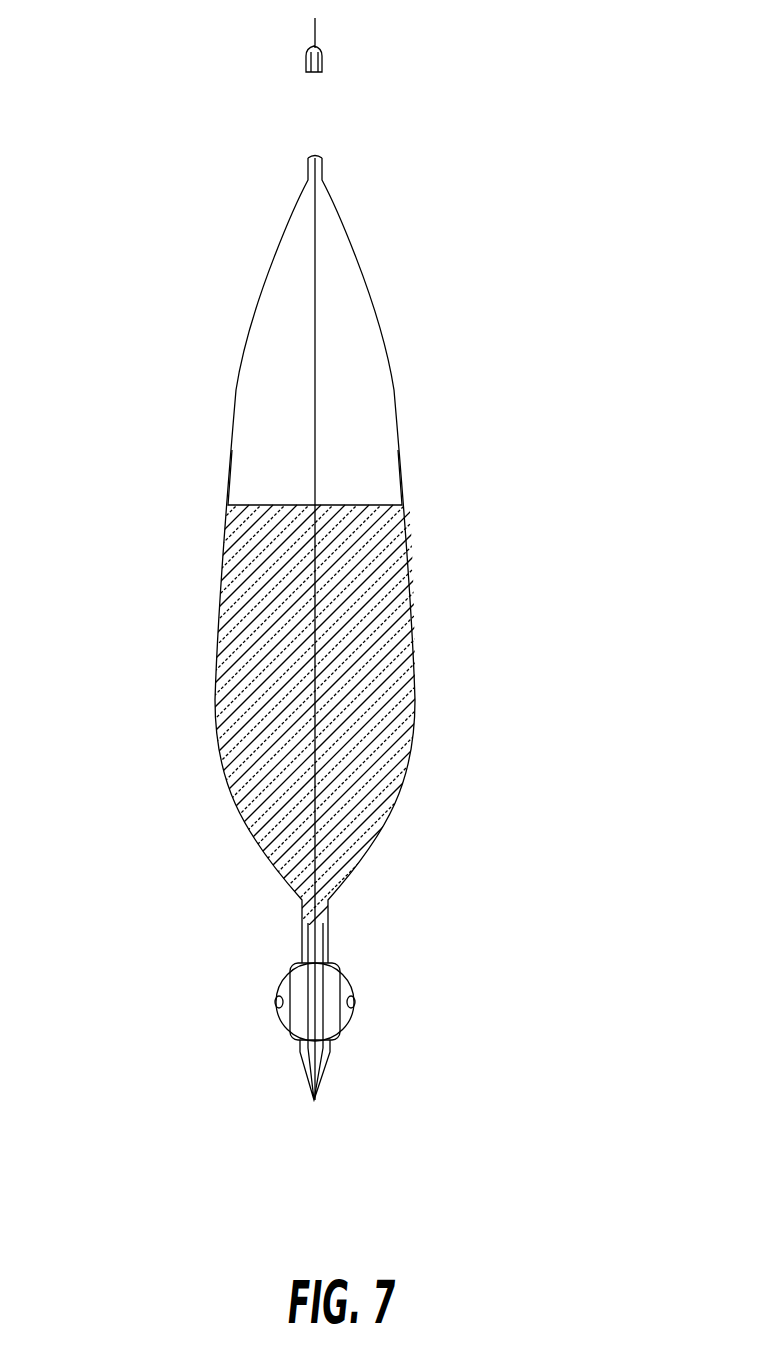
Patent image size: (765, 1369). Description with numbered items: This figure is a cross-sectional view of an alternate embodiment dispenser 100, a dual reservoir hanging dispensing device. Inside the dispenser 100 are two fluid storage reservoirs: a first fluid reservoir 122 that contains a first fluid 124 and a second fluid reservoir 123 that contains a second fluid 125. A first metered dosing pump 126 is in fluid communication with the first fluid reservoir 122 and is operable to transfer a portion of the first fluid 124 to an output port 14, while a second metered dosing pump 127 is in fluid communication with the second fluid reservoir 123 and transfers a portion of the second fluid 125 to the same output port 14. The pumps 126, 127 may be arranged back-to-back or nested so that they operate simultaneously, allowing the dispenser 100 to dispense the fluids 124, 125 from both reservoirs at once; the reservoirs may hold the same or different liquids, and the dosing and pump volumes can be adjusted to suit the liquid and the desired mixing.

The dispenser 100 is at (418, 311).
The first fluid reservoir 122 is at (385, 635).
The second fluid reservoir 123 is at (230, 653).
The first fluid 124 is at (379, 493).
The second fluid 125 is at (298, 493).
The first metered dosing pump 126 is at (353, 1020).
The second metered dosing pump 127 is at (283, 1025).
The output port 14 is at (314, 1103).